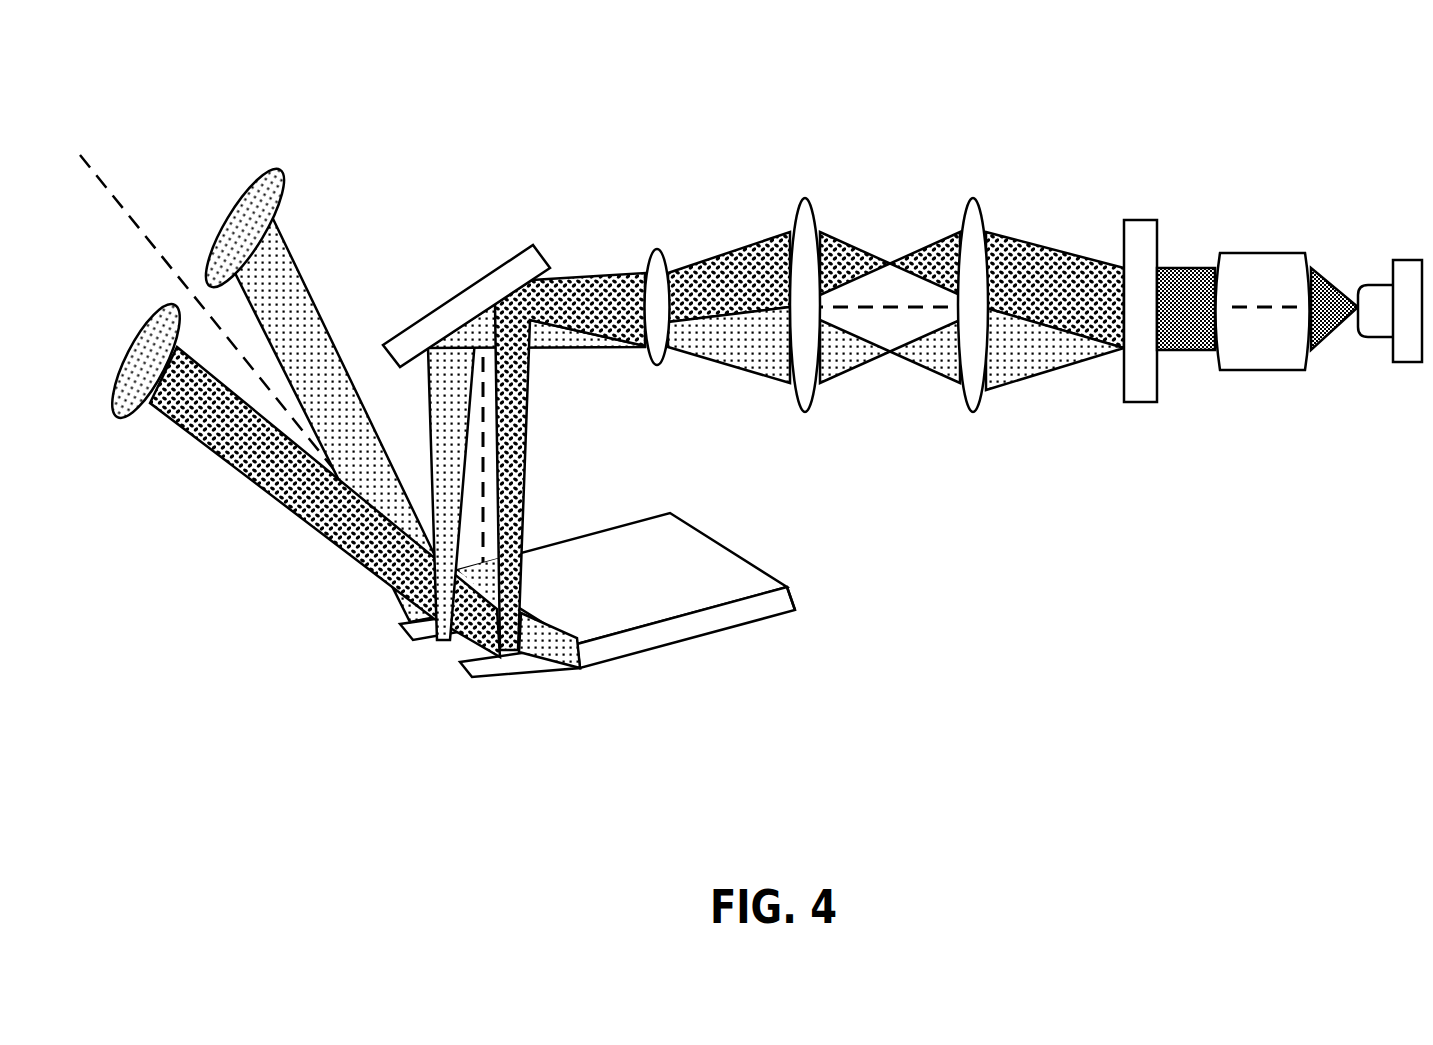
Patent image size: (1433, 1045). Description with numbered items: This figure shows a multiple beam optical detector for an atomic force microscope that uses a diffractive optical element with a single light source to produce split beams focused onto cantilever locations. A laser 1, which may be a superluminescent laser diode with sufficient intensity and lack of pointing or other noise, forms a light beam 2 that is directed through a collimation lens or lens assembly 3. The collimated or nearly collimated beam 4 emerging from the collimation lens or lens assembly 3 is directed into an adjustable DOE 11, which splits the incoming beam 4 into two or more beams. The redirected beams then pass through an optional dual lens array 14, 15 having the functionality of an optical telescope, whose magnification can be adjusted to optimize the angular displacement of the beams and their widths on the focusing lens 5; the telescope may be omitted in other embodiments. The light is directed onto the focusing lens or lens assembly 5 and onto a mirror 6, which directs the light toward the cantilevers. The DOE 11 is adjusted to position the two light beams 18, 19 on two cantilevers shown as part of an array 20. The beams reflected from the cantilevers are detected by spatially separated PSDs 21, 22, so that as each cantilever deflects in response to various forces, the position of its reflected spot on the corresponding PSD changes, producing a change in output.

The laser 1 is at (1410, 366).
The light beam 2 is at (1340, 350).
The collimation lens or lens assembly 3 is at (1275, 245).
The collimated beam 4 is at (1188, 260).
The focusing lens or lens assembly 5 is at (657, 240).
The mirror 6 is at (472, 275).
The adjustable DOE 11 is at (1142, 212).
The dual lens array lens 14 is at (973, 196).
The dual lens array lens 15 is at (803, 193).
The light beam 18 is at (1057, 244).
The light beam 19 is at (1012, 393).
The array 20 is at (745, 545).
The PSD 21 is at (280, 160).
The PSD 22 is at (135, 424).